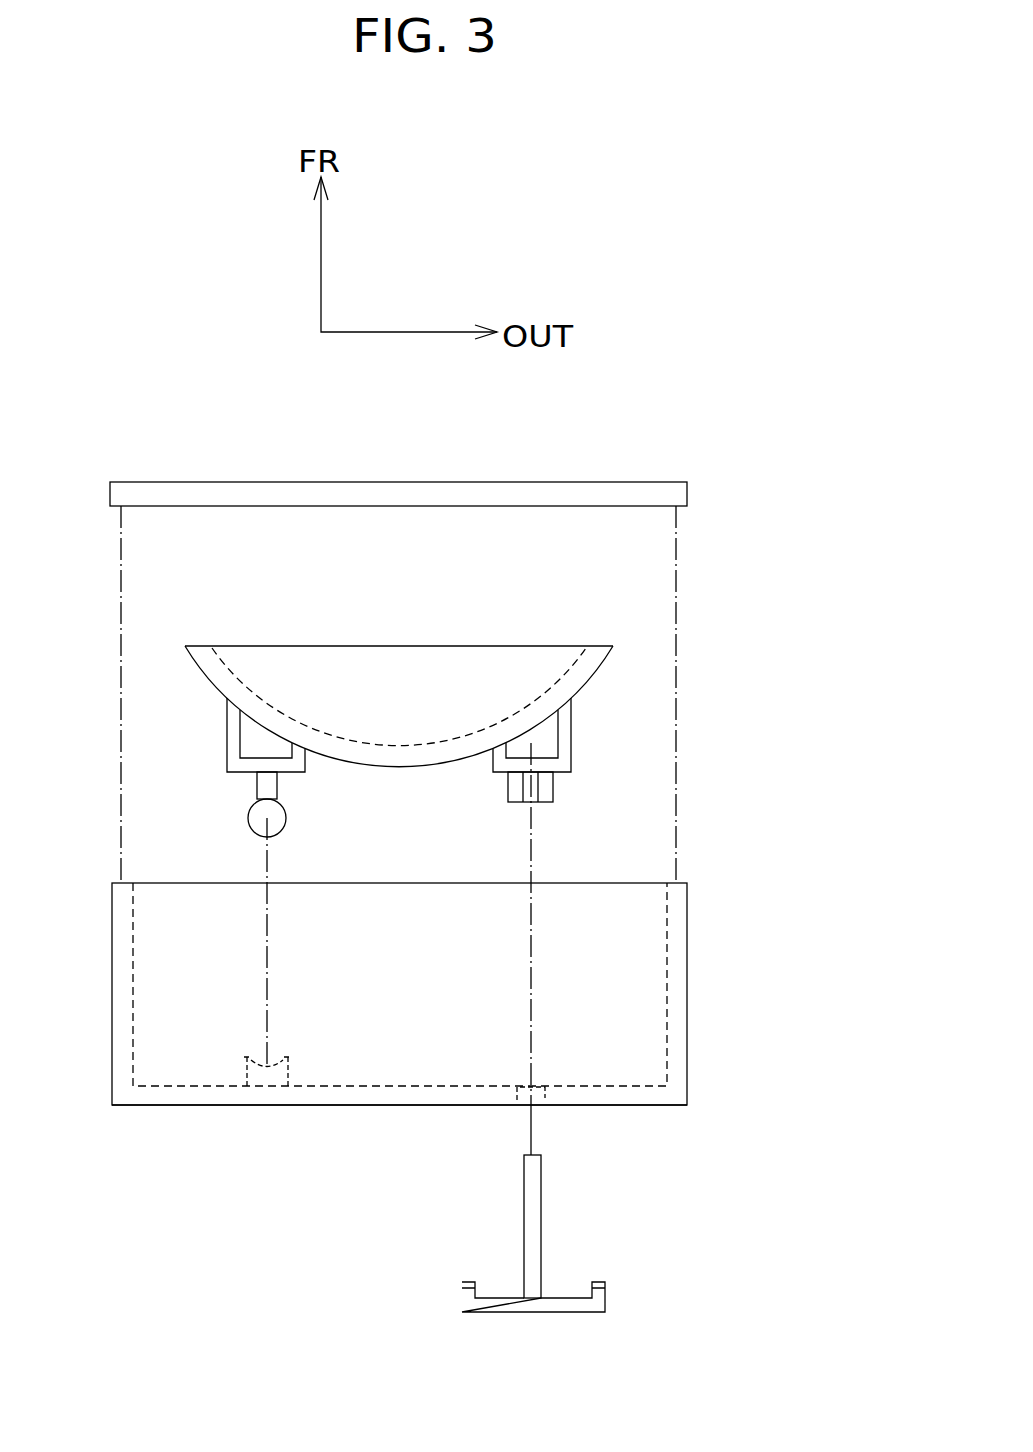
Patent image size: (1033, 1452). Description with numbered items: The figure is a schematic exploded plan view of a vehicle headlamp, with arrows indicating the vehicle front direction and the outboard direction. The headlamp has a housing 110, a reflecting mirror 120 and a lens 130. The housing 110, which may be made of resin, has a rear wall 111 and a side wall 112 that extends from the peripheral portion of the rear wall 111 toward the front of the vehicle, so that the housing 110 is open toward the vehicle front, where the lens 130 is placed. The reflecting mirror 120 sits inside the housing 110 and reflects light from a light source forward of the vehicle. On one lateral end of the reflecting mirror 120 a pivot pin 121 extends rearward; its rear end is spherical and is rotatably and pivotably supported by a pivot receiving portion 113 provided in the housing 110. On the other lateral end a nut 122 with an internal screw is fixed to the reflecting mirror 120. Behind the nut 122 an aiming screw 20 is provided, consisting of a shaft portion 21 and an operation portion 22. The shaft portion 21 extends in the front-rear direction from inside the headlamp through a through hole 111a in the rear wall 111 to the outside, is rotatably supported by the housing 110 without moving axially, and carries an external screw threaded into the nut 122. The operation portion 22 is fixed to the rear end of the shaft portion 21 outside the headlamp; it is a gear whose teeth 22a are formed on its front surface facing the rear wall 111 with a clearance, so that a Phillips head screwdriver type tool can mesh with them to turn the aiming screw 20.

The lens 130 is at (573, 490).
The reflecting mirror 120 is at (467, 645).
The pivot pin 121 is at (255, 812).
The nut 122 is at (548, 786).
The housing 110 is at (688, 997).
The side wall 112 is at (677, 947).
The rear wall 111 is at (349, 1100).
The pivot receiving portion 113 is at (278, 1057).
The through hole 111a is at (538, 1107).
The aiming screw 20 is at (536, 1248).
The shaft portion 21 is at (534, 1200).
The operation portion 22 is at (513, 1303).
The teeth 22a is at (466, 1282).